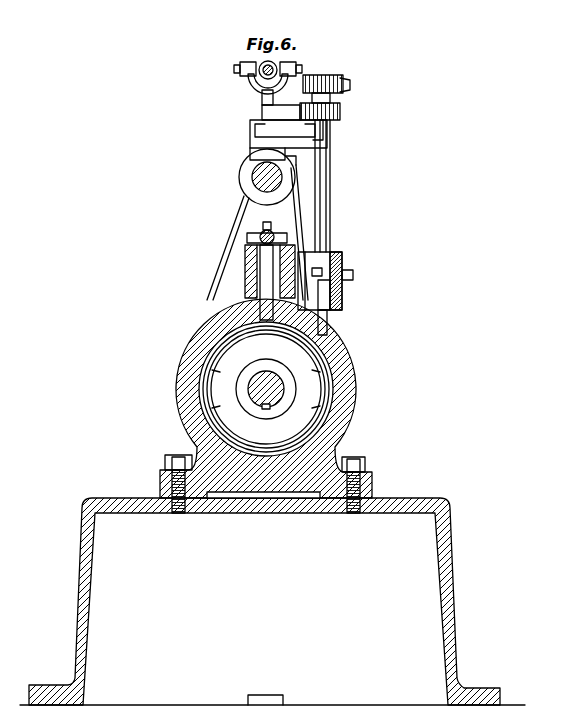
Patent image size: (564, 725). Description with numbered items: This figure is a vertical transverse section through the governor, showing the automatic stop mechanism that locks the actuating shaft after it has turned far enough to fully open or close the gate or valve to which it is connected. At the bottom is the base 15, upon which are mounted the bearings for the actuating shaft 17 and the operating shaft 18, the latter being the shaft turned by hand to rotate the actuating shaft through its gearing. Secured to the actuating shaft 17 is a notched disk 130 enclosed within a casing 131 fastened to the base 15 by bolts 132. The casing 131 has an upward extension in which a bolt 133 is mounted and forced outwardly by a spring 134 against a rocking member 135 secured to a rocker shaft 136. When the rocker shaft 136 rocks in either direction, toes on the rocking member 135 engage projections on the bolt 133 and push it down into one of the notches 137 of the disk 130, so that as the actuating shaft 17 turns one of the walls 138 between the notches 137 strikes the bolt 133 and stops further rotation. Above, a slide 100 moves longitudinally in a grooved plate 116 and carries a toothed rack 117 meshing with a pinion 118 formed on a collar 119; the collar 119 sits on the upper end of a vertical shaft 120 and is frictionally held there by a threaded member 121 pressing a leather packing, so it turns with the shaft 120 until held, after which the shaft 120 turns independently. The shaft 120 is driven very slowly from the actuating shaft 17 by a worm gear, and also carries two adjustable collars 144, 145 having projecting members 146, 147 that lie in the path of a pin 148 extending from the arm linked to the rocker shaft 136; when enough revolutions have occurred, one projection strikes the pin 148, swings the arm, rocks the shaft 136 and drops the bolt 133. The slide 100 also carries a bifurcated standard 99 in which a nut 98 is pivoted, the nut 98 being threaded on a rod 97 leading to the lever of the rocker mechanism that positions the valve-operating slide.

The base 15 is at (82, 582).
The actuating shaft 17 is at (286, 386).
The operating shaft 18 is at (262, 180).
The rod 97 is at (262, 67).
The nut 98 is at (281, 63).
The bifurcated standard 99 is at (253, 82).
The slide 100 is at (262, 128).
The grooved plate 116 is at (252, 146).
The toothed rack 117 is at (286, 104).
The pinion 118 is at (341, 118).
The collar 119 is at (328, 80).
The shaft 120 is at (331, 172).
The threaded member 121 is at (348, 94).
The notched disk 130 is at (310, 398).
The casing 131 is at (366, 380).
The bolts 132 is at (368, 462).
The bolt 133 is at (262, 293).
The spring 134 is at (250, 268).
The rocking member 135 is at (258, 236).
The rocker shaft 136 is at (282, 229).
The notches 137 is at (198, 386).
The walls 138 is at (206, 340).
The collar 144 is at (344, 262).
The collar 145 is at (343, 298).
The projecting member 146 is at (355, 276).
The projecting member 147 is at (333, 312).
The pin 148 is at (332, 256).